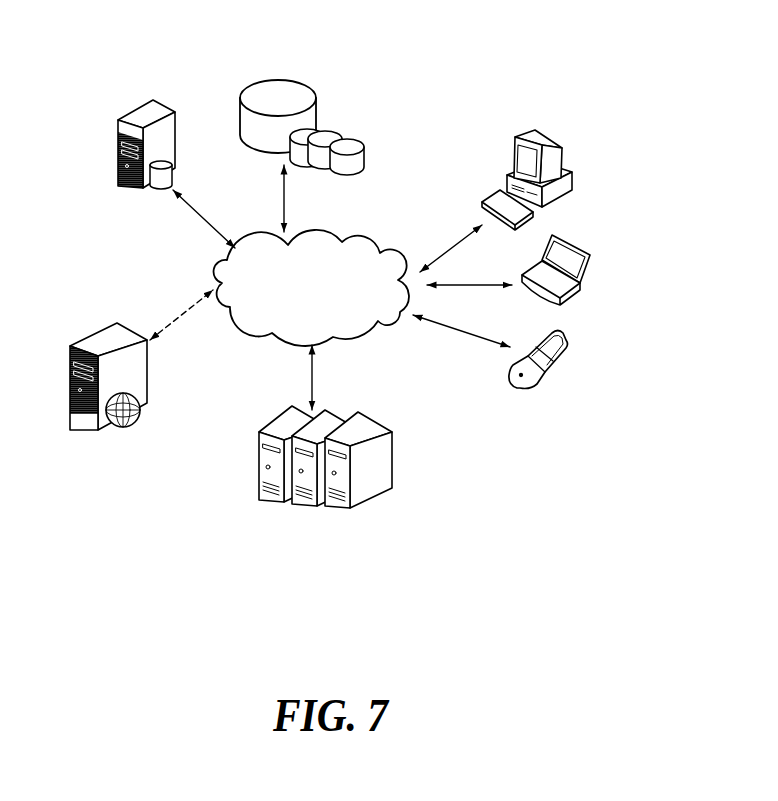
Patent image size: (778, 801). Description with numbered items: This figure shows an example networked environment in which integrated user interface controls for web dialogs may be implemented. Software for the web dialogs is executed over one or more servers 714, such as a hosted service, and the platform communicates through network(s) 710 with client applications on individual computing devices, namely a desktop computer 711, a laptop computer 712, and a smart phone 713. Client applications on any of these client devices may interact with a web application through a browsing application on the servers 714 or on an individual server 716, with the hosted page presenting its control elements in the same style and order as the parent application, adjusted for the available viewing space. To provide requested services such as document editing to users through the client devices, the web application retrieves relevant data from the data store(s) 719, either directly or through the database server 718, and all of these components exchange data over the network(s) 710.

The network(s) 710 is at (317, 221).
The desktop computer 711 is at (561, 124).
The laptop computer 712 is at (591, 234).
The smart phone 713 is at (566, 332).
The servers 714 is at (281, 415).
The individual server 716 is at (90, 332).
The database server 718 is at (150, 197).
The data store(s) 719 is at (293, 59).